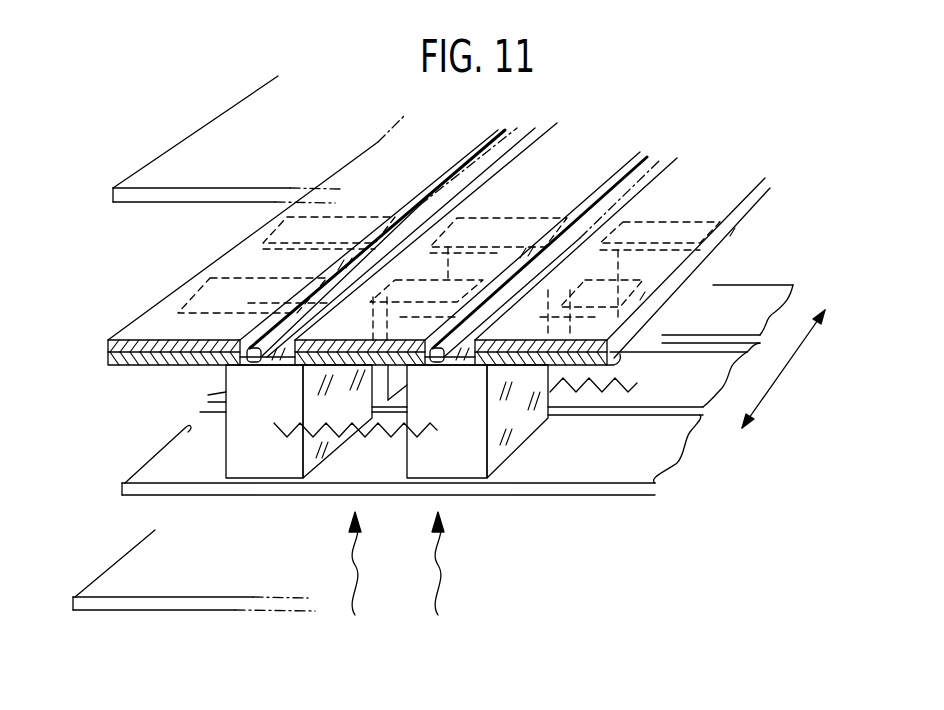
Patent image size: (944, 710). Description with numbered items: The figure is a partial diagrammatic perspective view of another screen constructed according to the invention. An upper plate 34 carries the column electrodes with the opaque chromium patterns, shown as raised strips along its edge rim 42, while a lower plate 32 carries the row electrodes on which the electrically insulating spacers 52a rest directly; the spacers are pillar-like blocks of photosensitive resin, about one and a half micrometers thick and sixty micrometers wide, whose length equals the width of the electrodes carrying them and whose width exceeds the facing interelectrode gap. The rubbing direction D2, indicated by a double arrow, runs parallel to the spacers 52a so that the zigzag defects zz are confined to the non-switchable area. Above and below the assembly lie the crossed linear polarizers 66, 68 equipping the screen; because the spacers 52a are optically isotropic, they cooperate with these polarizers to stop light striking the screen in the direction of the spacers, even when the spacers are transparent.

The upper plate with channels 34 is at (568, 190).
The edge rim of upper plate 42 is at (727, 237).
The crossed linear polarizer 66 is at (176, 170).
The crossed linear polarizer 68 is at (103, 606).
The electrically insulating spacer 52a is at (287, 463).
The zigzag defect zz is at (283, 440).
The lower layered plate 32 is at (688, 382).
The rubbing direction D2 is at (768, 400).